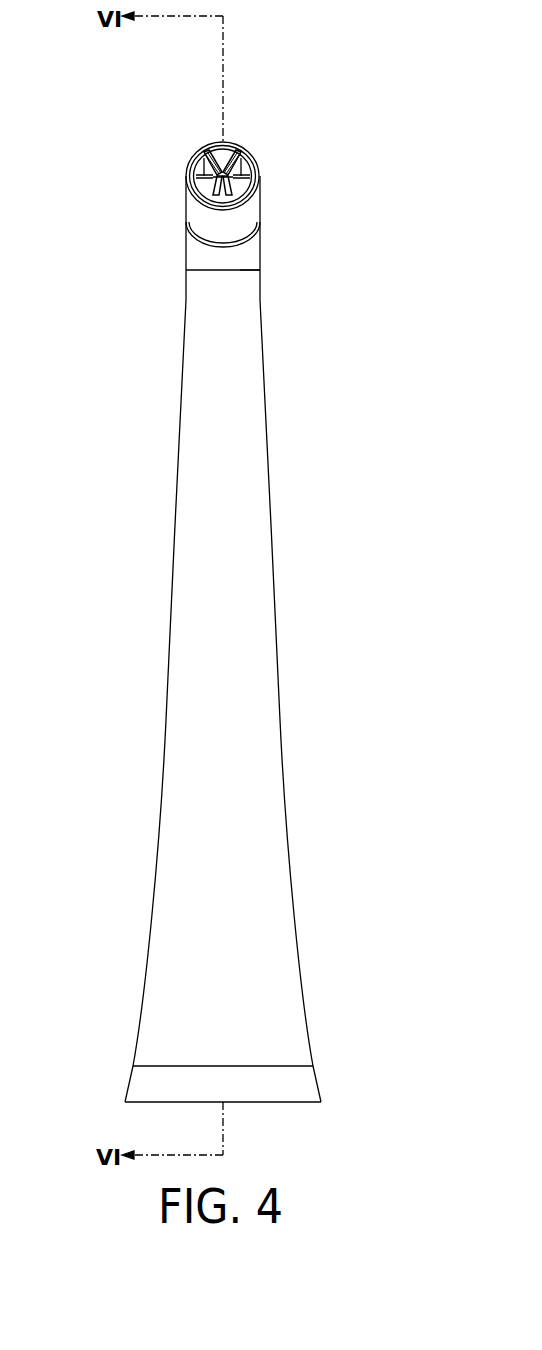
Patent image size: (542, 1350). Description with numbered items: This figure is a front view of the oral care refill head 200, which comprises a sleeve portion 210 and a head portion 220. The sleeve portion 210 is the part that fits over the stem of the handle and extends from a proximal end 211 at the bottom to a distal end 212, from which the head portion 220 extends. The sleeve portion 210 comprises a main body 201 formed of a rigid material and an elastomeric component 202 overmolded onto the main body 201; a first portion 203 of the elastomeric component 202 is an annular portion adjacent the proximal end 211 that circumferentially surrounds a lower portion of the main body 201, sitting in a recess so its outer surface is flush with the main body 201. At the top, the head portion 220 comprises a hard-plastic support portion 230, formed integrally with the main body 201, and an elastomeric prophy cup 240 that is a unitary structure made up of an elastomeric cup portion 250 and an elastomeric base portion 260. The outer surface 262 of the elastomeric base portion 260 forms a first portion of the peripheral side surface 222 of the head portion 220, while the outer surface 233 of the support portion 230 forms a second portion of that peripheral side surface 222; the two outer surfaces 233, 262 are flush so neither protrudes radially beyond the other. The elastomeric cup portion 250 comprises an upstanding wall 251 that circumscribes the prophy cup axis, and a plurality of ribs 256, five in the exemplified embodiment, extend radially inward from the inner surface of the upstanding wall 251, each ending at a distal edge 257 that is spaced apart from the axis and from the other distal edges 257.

The oral care refill head 200 is at (165, 481).
The main body 201 is at (245, 653).
The elastomeric component 202 is at (252, 1075).
The first portion 203 is at (155, 1087).
The sleeve portion 210 is at (208, 747).
The proximal end 211 is at (292, 1102).
The distal end 212 is at (252, 263).
The head portion 220 is at (178, 187).
The peripheral side surface 222 is at (186, 244).
The support portion 230 is at (205, 238).
The outer surface 233 is at (258, 268).
The elastomeric prophy cup 240 is at (265, 173).
The elastomeric cup portion 250 is at (243, 214).
The upstanding wall 251 is at (236, 160).
The ribs 256 is at (193, 156).
The distal edge 257 is at (214, 165).
The elastomeric base portion 260 is at (205, 238).
The outer surface 262 is at (186, 222).